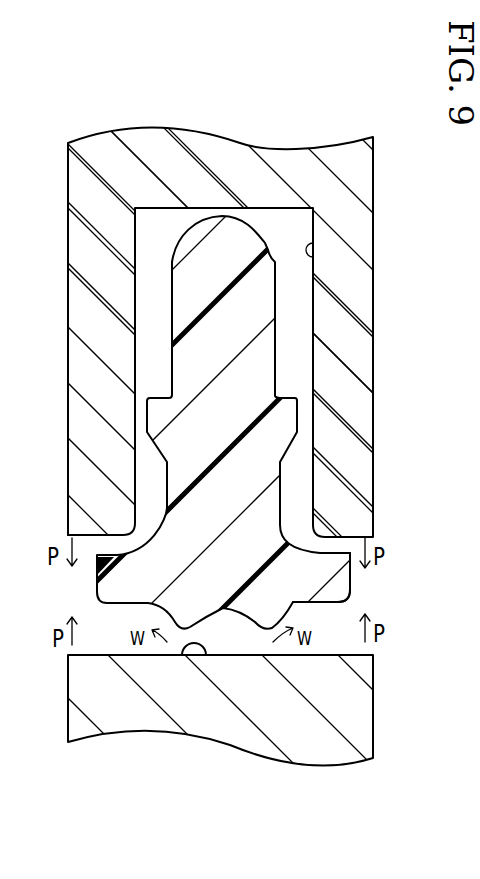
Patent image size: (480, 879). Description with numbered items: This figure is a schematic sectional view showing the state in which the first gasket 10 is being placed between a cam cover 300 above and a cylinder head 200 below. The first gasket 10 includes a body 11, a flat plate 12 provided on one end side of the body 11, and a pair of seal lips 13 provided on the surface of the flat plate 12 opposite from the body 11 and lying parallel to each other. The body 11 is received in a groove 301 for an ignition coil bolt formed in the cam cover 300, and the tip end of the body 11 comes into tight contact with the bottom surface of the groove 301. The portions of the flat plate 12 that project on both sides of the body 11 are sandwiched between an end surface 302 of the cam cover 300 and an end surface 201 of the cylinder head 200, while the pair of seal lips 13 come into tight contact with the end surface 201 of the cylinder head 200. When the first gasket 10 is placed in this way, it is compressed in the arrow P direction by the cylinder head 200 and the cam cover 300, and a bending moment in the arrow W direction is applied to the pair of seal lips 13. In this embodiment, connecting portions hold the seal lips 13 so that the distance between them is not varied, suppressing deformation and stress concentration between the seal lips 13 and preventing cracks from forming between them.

The first gasket 10 is at (160, 276).
The body 11 is at (185, 376).
The flat plate 12 is at (338, 582).
The seal lips 13 is at (257, 630).
The cylinder head 200 is at (113, 713).
The end surface of the cylinder head 201 is at (207, 660).
The cam cover 300 is at (95, 145).
The groove 301 is at (318, 256).
The end surface of the cam cover 302 is at (97, 530).